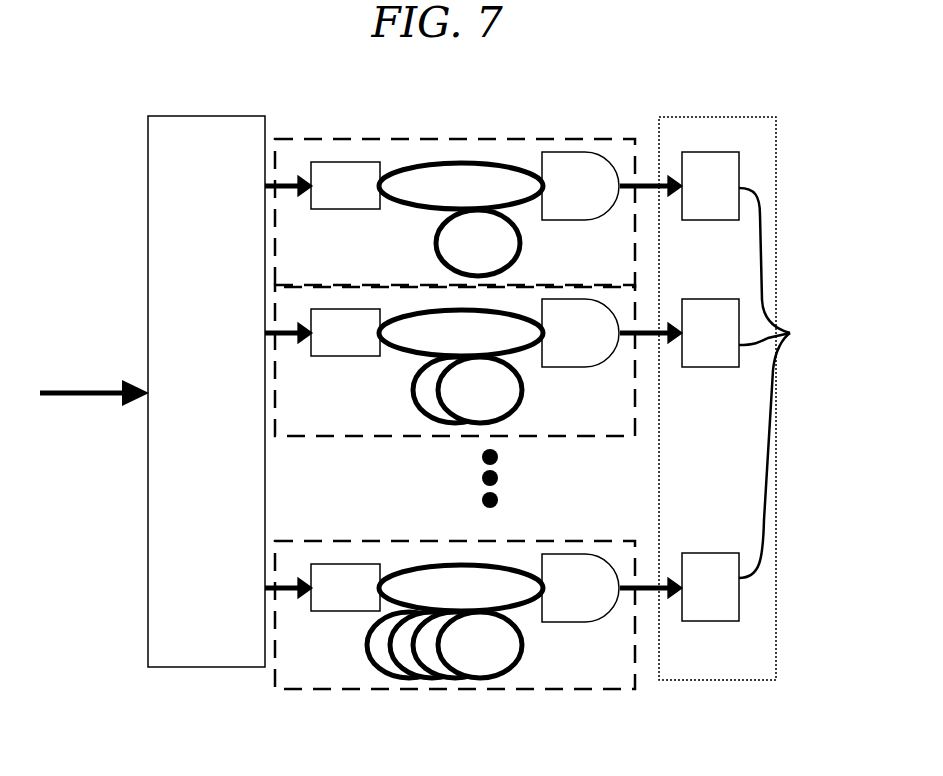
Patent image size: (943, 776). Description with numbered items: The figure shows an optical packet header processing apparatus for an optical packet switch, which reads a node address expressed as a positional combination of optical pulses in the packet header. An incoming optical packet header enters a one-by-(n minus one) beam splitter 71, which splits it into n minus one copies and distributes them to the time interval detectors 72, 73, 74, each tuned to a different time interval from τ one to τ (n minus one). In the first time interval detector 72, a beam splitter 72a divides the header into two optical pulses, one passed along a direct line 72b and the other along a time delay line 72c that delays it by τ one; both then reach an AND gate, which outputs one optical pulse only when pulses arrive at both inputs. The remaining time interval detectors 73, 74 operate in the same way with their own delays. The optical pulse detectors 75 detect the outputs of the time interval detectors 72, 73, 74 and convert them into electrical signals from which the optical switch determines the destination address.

The 1×(n−1) beam splitter 71 is at (190, 116).
The τ1 time interval detector 72 is at (473, 170).
The beam splitter 72a is at (345, 185).
The direct line 72b is at (461, 219).
The τ1 time delay line 72c is at (580, 186).
The time interval detector 73 is at (303, 438).
The τ(n−1) time interval detector 74 is at (330, 690).
The optical pulse detectors 75 is at (745, 398).